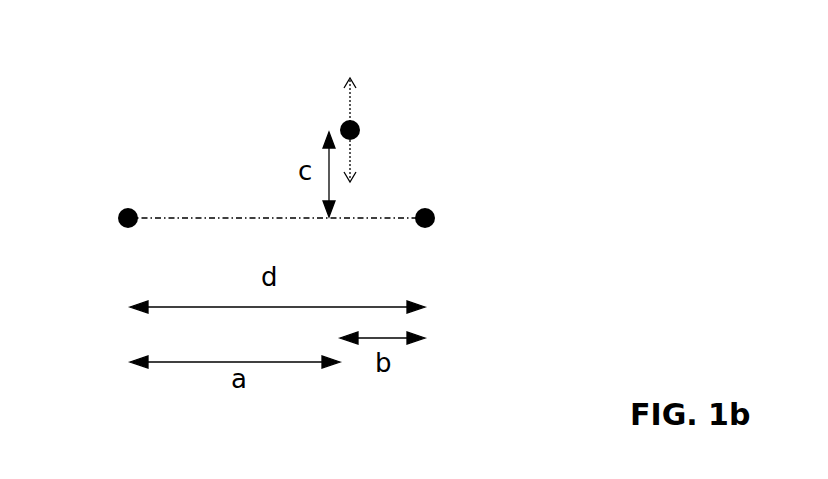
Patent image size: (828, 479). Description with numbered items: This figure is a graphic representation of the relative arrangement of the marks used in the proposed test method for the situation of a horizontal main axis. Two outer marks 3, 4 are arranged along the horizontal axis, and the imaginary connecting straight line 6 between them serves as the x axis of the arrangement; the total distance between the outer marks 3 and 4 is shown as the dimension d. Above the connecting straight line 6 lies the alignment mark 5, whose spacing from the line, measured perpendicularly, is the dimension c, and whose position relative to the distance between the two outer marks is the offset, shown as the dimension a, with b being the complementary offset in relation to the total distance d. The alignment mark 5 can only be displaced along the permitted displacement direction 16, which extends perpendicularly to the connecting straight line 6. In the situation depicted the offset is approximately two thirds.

The outer mark 3 is at (120, 214).
The outer mark 4 is at (436, 212).
The alignment mark 5 is at (341, 124).
The connecting straight line 6 is at (200, 218).
The permitted displacement direction for the alignment mark 16 is at (355, 164).